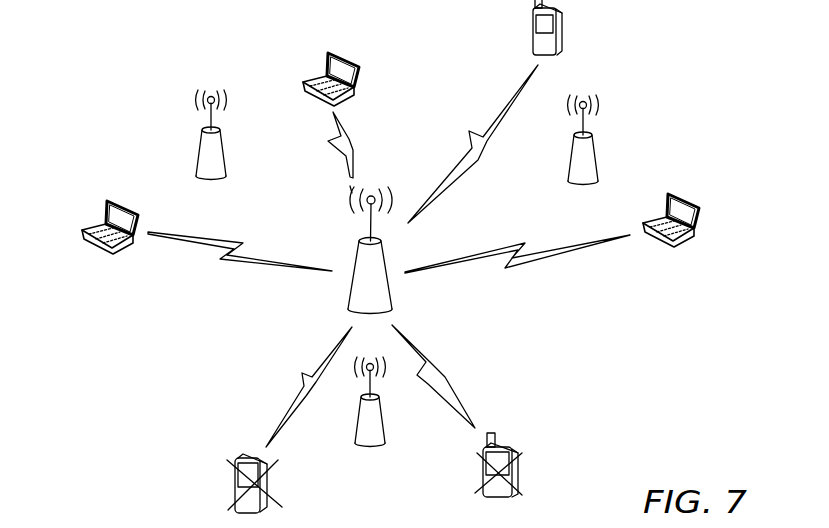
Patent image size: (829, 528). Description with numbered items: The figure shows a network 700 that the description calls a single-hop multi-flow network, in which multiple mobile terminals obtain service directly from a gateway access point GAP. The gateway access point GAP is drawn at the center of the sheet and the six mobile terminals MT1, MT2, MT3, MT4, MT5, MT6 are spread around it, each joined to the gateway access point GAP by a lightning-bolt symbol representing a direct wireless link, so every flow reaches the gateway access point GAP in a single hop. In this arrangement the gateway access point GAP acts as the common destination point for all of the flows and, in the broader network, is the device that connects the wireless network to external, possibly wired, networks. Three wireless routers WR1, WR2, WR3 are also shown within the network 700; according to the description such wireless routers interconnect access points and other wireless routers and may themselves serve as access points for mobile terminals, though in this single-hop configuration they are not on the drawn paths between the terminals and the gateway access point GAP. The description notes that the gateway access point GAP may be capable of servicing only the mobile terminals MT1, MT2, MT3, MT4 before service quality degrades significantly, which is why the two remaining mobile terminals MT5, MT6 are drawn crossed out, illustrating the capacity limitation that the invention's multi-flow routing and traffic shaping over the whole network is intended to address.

The network 700 is at (653, 365).
The gateway access point GAP is at (351, 251).
The wireless router WR1 is at (229, 135).
The wireless router WR2 is at (601, 140).
The wireless router WR3 is at (370, 420).
The mobile terminal MT1 is at (90, 227).
The mobile terminal MT2 is at (318, 75).
The mobile terminal MT3 is at (569, 27).
The mobile terminal MT4 is at (690, 220).
The mobile terminal MT5 is at (519, 465).
The mobile terminal MT6 is at (236, 483).